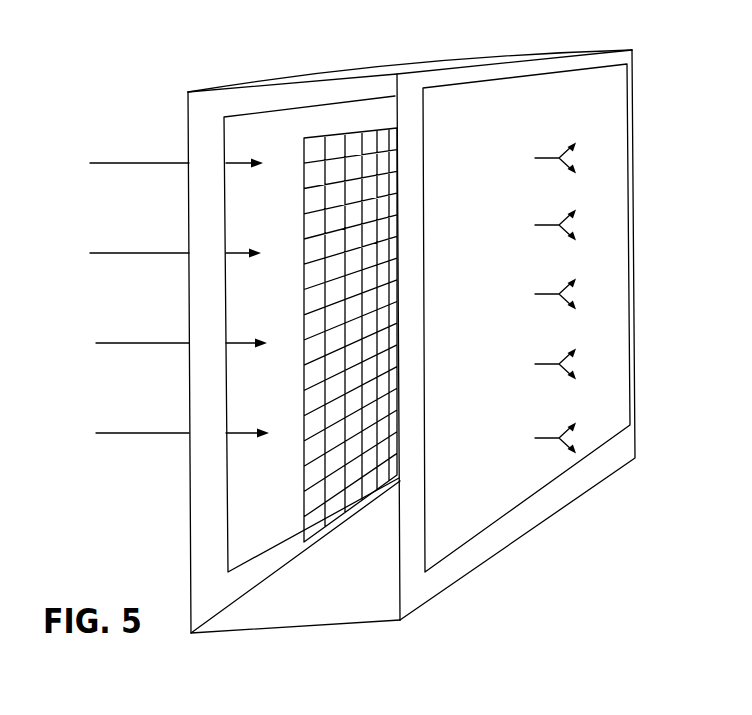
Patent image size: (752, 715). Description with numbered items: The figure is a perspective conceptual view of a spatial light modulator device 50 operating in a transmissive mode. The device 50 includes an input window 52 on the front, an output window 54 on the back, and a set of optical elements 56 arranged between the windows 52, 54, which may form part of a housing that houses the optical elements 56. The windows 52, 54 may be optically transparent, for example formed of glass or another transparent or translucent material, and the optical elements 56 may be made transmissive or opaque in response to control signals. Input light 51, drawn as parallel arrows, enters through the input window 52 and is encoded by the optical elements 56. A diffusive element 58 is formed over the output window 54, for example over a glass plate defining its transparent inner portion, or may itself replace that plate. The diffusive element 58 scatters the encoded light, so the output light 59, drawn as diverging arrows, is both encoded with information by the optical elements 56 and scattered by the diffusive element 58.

The spatial light modulator device 50 is at (174, 76).
The input light 51 is at (122, 268).
The input window 52 is at (210, 600).
The output window 54 is at (413, 588).
The set of optical elements 56 is at (347, 494).
The diffusive element 58 is at (463, 527).
The output light 59 is at (560, 133).